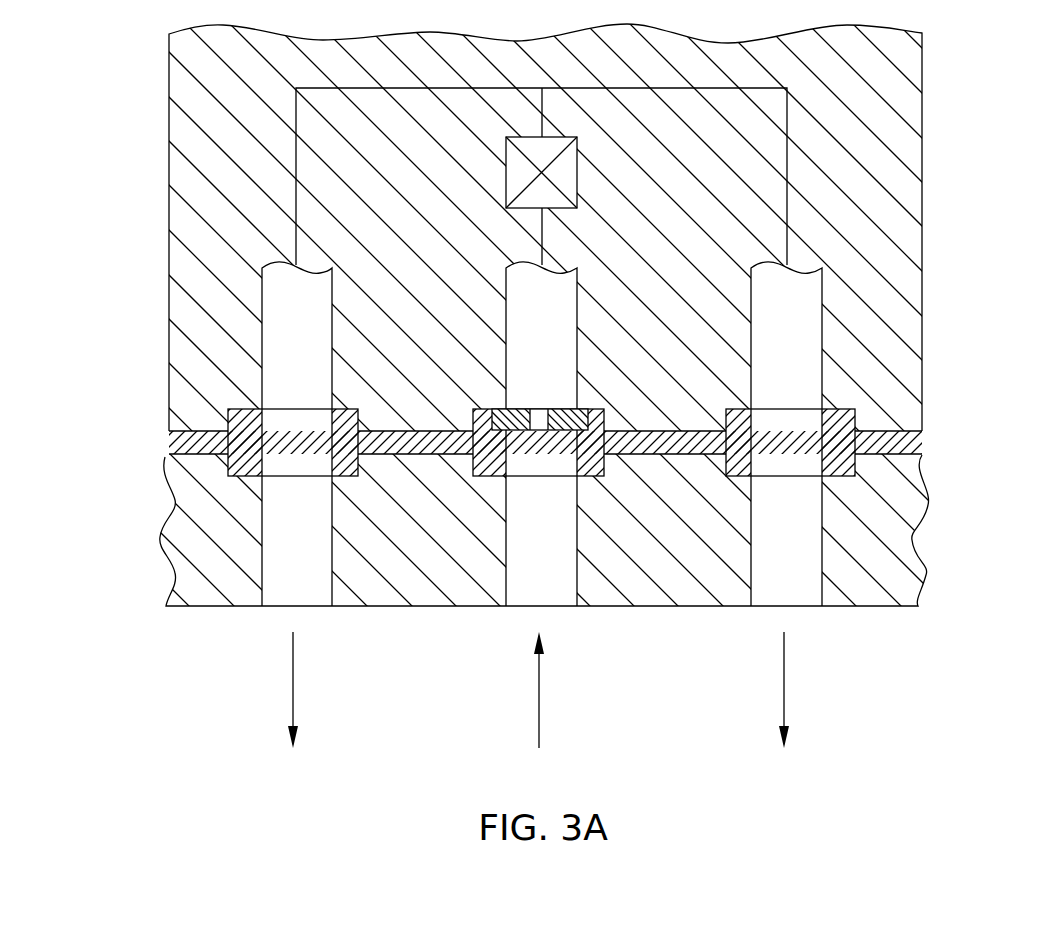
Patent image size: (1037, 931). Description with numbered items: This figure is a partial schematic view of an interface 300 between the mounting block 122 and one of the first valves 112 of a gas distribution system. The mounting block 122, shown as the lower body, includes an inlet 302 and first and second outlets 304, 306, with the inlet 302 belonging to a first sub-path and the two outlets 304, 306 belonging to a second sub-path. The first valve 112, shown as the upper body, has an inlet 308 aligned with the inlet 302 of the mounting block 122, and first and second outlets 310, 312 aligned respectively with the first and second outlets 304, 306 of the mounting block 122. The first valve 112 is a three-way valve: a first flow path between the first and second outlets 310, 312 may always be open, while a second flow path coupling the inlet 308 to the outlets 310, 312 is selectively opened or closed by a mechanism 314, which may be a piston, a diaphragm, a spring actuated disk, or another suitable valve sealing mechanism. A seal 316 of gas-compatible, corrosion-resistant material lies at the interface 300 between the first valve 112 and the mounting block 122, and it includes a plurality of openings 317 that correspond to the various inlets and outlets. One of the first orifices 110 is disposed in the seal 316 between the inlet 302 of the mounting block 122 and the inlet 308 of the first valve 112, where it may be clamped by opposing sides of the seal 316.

The first valve 112 is at (922, 160).
The mounting block 122 is at (922, 556).
The interface 300 is at (966, 405).
The seal 316 is at (169, 440).
The openings 317 is at (277, 457).
The first outlet 310 is at (332, 288).
The inlet 308 is at (577, 288).
The second outlet 312 is at (751, 348).
The mechanism 314 is at (577, 166).
The first orifice 110 is at (518, 409).
The first outlet 304 is at (305, 606).
The inlet 302 is at (556, 606).
The second outlet 306 is at (795, 606).